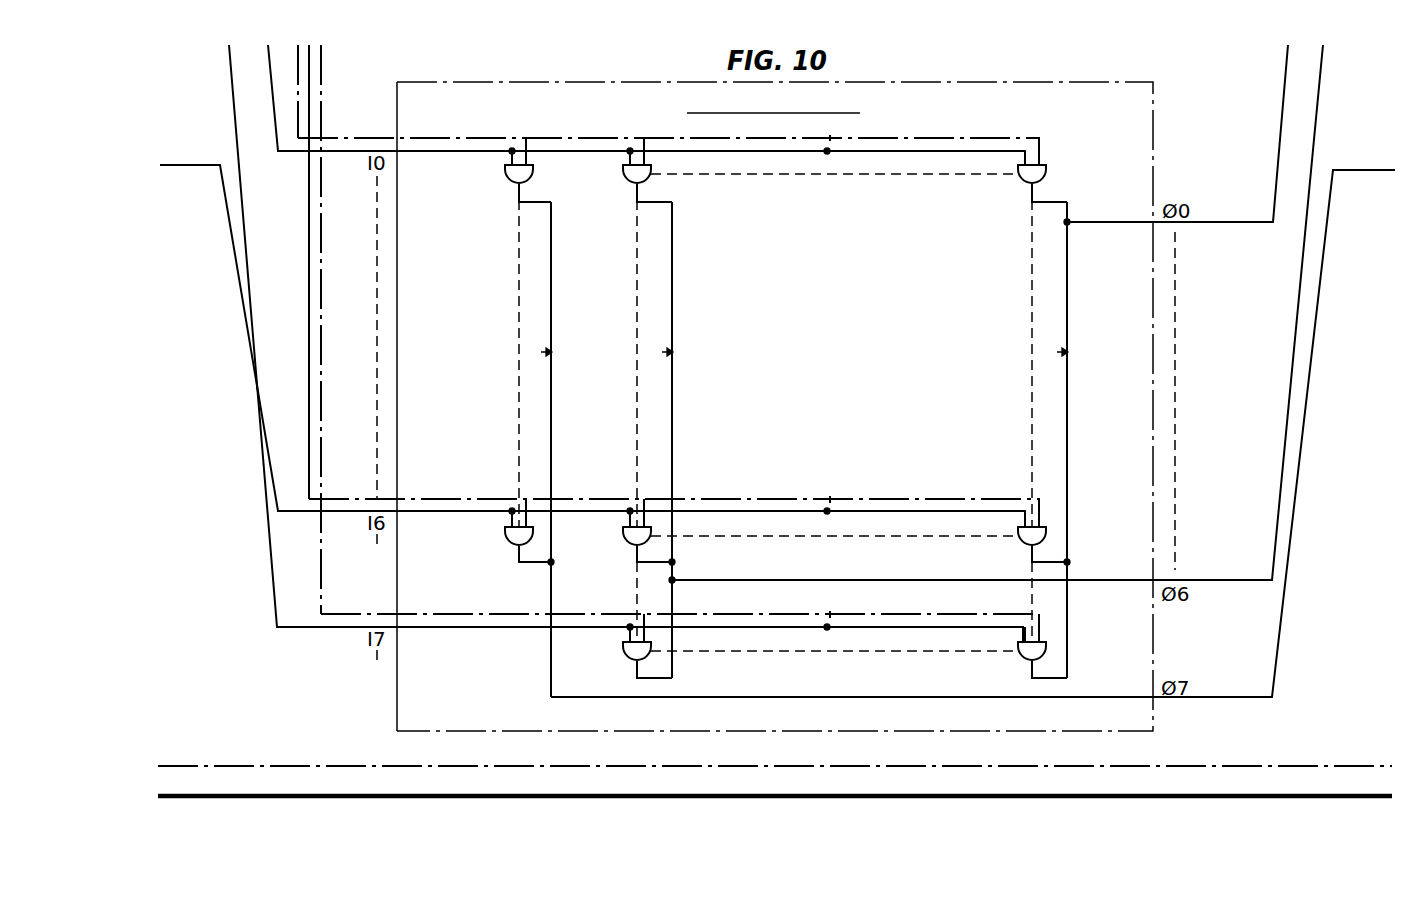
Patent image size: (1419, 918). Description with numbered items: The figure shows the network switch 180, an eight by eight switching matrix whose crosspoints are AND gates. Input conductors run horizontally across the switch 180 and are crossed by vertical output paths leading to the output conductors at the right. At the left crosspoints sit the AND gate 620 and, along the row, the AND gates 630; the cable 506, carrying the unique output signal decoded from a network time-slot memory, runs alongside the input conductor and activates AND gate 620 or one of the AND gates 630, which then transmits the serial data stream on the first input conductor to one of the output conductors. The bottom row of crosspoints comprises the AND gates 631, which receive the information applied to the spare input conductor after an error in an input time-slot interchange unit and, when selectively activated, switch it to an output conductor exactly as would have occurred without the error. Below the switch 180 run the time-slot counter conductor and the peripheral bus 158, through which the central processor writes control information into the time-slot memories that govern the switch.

The network switch 180 is at (686, 79).
The cable 506 is at (507, 136).
The AND gate 620 is at (506, 172).
The AND gates 630 is at (622, 172).
The AND gates 631 is at (622, 655).
The peripheral bus 158 is at (629, 793).